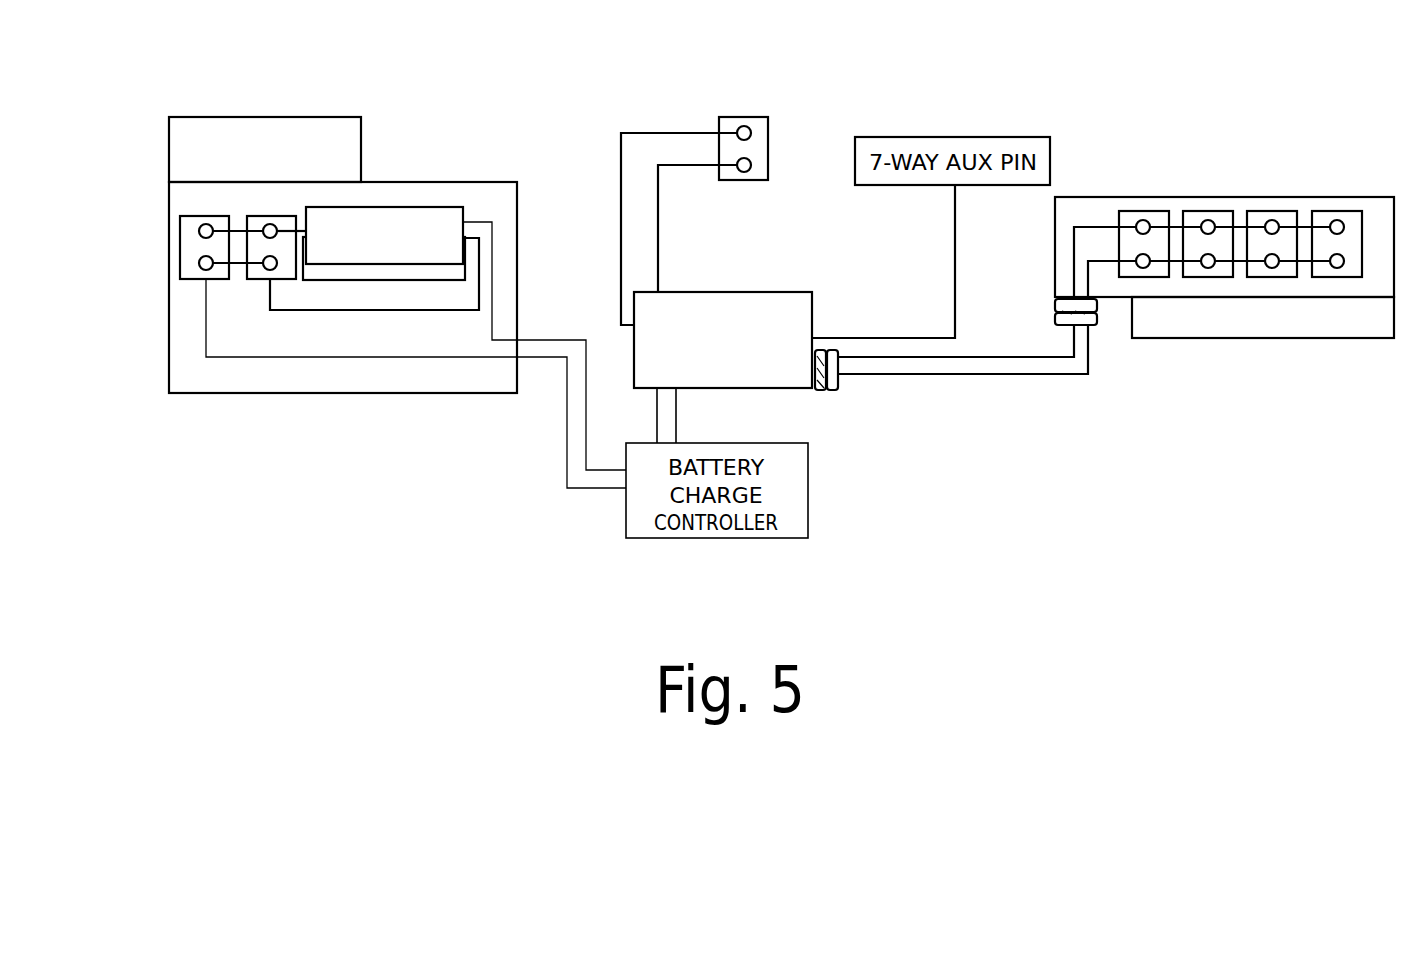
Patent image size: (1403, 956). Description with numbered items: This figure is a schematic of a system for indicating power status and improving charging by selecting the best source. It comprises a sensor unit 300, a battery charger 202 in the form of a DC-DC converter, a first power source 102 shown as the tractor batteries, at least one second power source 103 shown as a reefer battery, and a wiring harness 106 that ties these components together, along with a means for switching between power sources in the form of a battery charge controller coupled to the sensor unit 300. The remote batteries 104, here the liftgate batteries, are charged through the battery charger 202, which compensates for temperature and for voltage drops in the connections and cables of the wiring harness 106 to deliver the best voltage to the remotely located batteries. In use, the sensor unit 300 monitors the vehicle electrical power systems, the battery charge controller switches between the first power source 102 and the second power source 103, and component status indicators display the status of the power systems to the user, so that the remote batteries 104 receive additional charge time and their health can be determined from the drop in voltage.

The first power source 102 is at (1250, 210).
The second power source 103 is at (750, 117).
The remote batteries 104 is at (248, 215).
The wiring harness 106 is at (621, 160).
The battery charger 202 is at (455, 207).
The sensor unit 300 is at (748, 388).